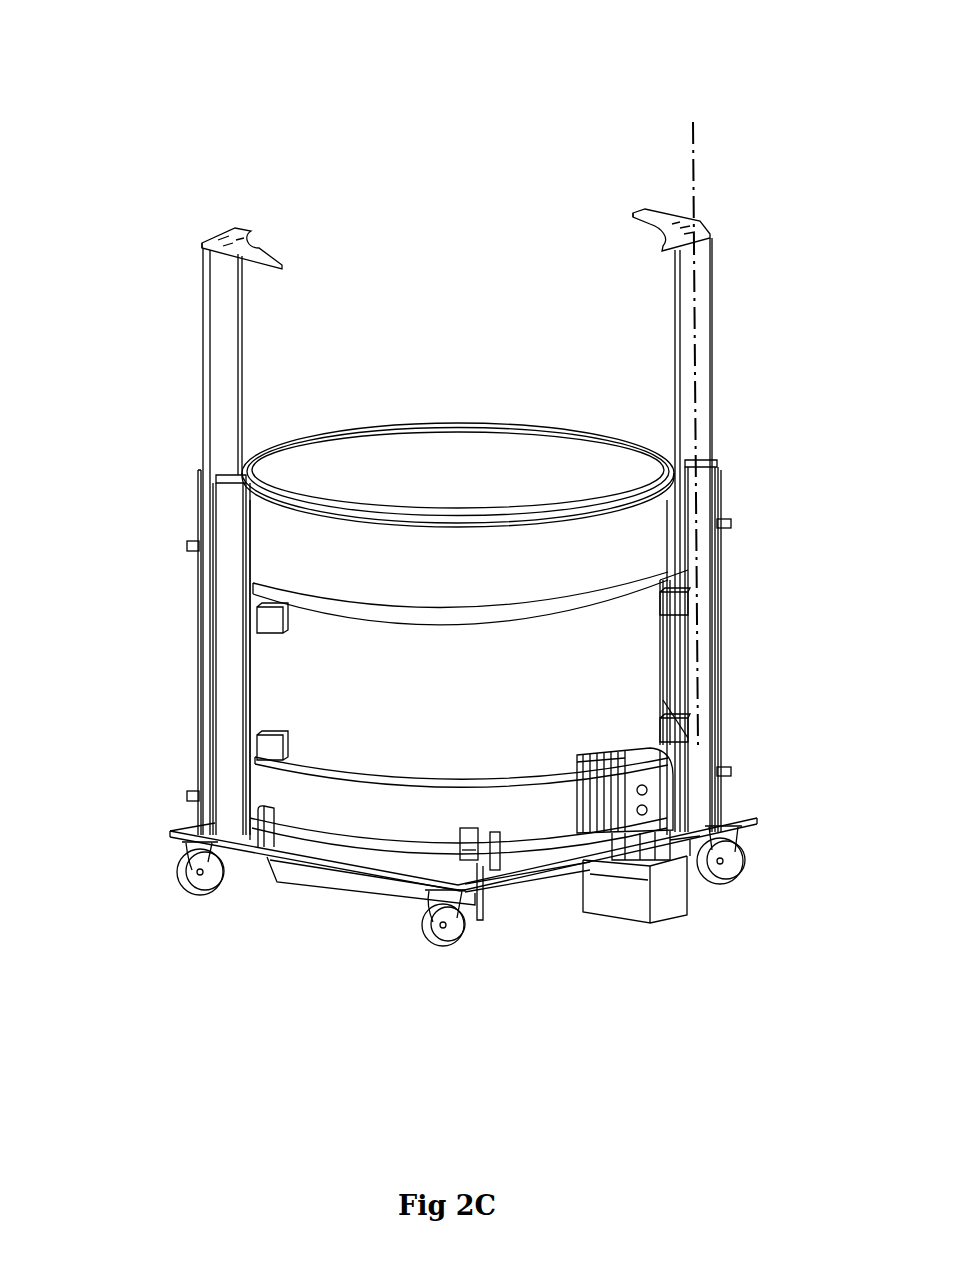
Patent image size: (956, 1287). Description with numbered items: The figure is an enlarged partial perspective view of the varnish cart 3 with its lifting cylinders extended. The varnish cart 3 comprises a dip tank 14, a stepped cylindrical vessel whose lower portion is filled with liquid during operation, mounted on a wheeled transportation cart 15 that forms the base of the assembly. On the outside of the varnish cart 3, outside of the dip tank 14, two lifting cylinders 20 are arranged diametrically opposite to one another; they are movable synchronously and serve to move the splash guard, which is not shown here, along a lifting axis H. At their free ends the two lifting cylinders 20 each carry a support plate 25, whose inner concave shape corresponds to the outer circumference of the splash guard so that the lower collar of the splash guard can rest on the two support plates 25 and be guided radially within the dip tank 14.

The varnish cart 3 is at (460, 163).
The dip tank 14 is at (538, 733).
The transportation cart 15 is at (383, 872).
The lifting cylinder 20 is at (212, 357).
The support plate 25 is at (228, 238).
The lifting axis H is at (695, 147).